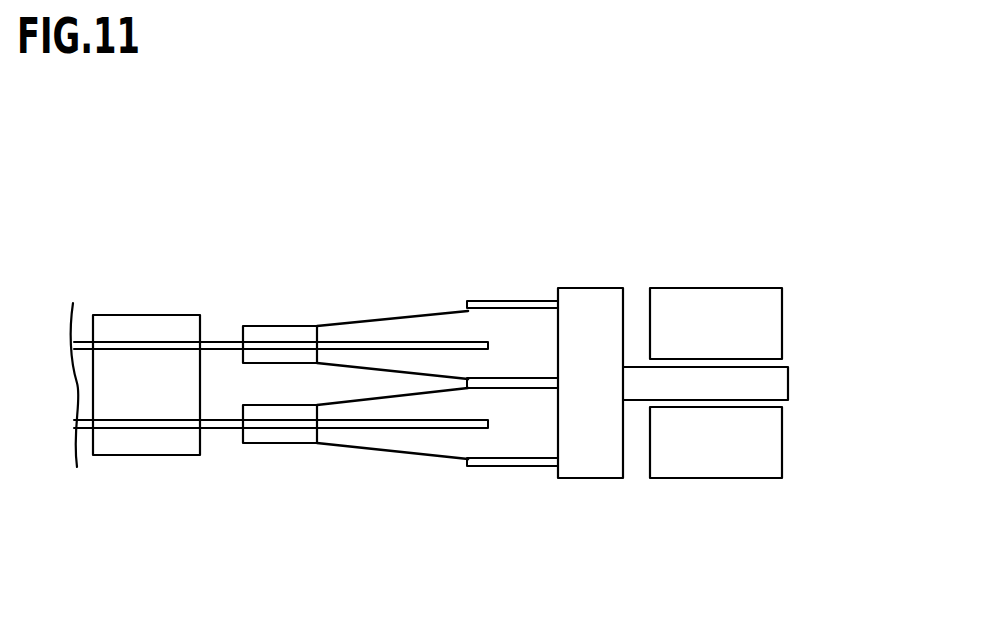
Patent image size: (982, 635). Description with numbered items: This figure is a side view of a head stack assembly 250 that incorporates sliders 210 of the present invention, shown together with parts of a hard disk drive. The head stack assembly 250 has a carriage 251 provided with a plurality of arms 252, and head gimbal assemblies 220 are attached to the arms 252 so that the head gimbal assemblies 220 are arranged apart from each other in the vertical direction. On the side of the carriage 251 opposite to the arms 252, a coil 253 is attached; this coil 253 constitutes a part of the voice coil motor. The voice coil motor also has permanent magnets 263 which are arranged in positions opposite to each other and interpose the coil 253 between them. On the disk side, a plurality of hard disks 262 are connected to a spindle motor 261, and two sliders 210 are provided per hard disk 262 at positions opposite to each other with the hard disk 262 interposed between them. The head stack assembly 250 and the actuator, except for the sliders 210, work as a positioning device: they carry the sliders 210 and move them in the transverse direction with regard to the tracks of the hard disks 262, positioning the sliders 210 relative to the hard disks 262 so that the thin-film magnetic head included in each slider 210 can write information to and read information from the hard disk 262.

The slider 210 is at (240, 334).
The head gimbal assembly 220 is at (383, 308).
The head stack assembly 250 is at (597, 255).
The carriage 251 is at (595, 470).
The arm 252 is at (485, 300).
The coil 253 is at (775, 385).
The spindle motor 261 is at (122, 322).
The hard disk 262 is at (213, 340).
The permanent magnet 263 is at (708, 288).